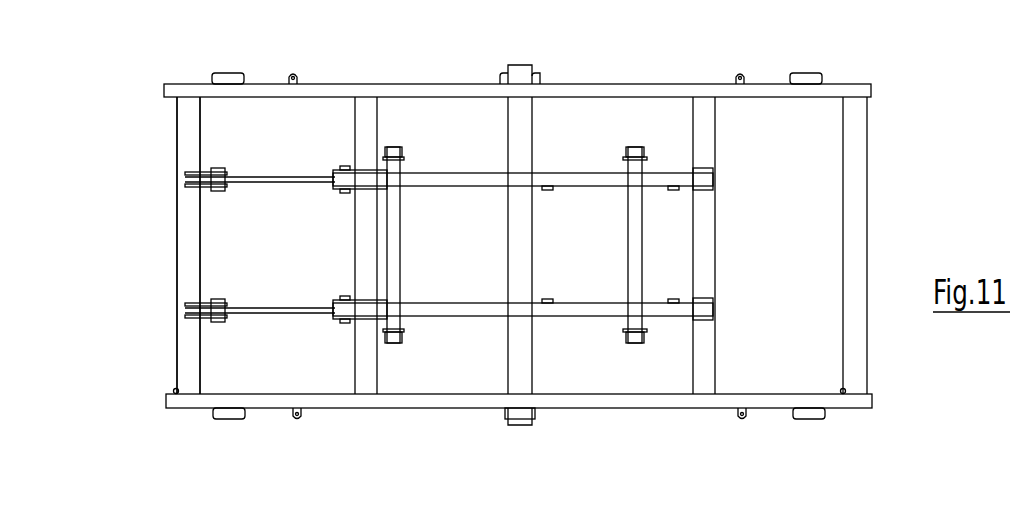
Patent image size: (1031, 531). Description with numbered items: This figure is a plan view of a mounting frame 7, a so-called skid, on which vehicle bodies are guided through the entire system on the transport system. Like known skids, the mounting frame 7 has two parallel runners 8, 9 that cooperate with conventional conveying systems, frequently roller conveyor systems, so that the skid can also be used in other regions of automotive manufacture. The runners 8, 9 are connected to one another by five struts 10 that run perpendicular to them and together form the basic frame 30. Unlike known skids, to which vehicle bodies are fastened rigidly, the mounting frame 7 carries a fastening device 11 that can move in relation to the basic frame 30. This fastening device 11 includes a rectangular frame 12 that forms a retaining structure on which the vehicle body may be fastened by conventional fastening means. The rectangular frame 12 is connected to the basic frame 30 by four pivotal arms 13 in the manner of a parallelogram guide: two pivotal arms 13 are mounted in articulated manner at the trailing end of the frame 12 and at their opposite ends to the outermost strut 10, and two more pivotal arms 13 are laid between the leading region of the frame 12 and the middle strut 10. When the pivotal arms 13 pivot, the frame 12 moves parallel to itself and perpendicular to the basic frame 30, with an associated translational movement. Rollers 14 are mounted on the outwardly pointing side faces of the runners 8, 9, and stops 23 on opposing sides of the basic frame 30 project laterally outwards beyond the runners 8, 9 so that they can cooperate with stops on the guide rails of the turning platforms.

The mounting frame 7 is at (445, 440).
The runner 8 is at (417, 410).
The runner 9 is at (682, 86).
The strut 10 is at (186, 223).
The fastening device 11 is at (455, 174).
The rectangular frame 12 is at (583, 176).
The pivotal arm 13 is at (258, 176).
The roller 14 is at (225, 72).
The stop 23 is at (508, 70).
The basic frame 30 is at (193, 282).